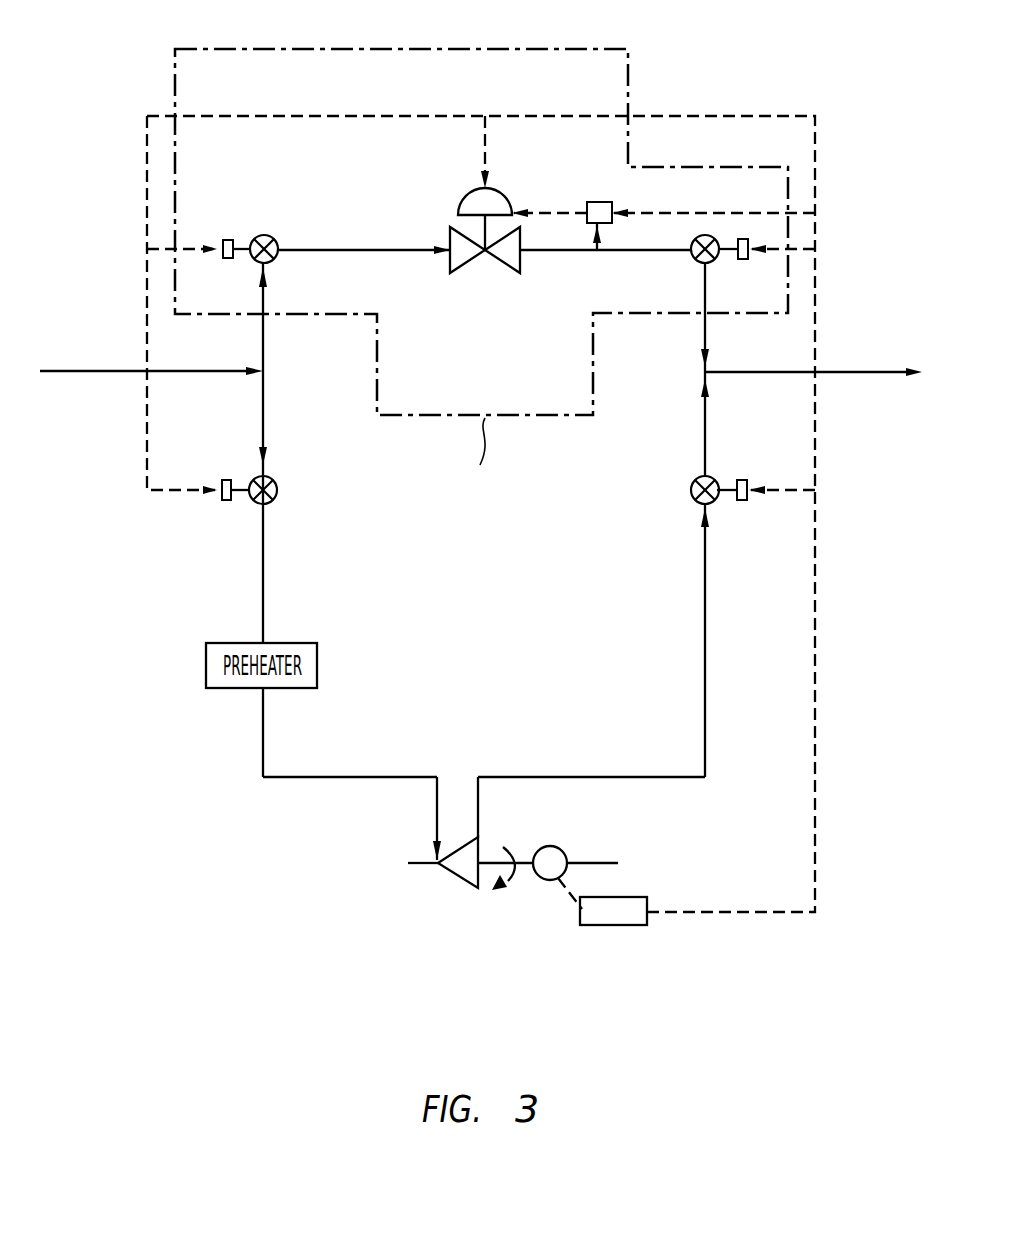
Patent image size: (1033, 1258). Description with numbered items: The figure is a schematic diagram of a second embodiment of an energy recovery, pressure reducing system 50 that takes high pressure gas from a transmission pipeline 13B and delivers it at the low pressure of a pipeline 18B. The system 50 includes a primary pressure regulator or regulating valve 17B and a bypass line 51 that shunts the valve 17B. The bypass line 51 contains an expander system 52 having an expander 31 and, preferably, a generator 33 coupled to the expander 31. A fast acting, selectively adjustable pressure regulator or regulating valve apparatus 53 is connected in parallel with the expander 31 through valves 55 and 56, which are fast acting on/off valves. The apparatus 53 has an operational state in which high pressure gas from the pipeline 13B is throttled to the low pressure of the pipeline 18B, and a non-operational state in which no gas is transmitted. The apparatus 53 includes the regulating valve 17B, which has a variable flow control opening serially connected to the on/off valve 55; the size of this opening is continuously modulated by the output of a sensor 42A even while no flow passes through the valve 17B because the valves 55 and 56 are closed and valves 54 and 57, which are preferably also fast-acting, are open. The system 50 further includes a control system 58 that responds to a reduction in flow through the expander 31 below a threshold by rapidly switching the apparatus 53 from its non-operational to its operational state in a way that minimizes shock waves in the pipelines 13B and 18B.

The transmission pipeline 13B is at (132, 366).
The pipeline 18B is at (893, 366).
The fast acting, selectively adjustable pressure regulator or regulating valve appar 53 is at (437, 48).
The on/off valve 55 is at (264, 235).
The valve 54 is at (276, 481).
The on/off valve 56 is at (692, 244).
The valve 57 is at (716, 481).
The primary pressure regulator or regulating valve 17B is at (505, 262).
The bypass line 51 is at (587, 776).
The expander 31 is at (460, 878).
The generator 33 is at (562, 848).
The sensor 42A is at (614, 926).
The energy recovery, pressure reducing system 50 is at (199, 813).
The expander system 52 is at (356, 859).
The control system 58 is at (527, 952).